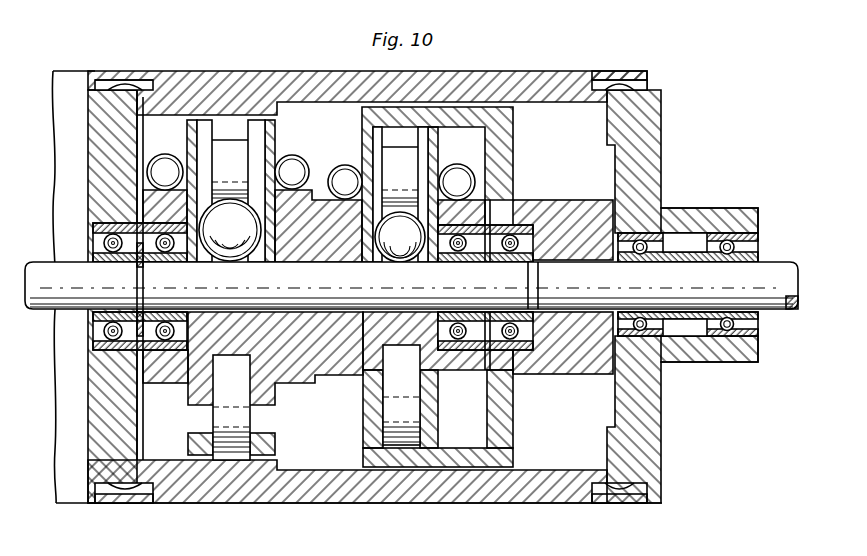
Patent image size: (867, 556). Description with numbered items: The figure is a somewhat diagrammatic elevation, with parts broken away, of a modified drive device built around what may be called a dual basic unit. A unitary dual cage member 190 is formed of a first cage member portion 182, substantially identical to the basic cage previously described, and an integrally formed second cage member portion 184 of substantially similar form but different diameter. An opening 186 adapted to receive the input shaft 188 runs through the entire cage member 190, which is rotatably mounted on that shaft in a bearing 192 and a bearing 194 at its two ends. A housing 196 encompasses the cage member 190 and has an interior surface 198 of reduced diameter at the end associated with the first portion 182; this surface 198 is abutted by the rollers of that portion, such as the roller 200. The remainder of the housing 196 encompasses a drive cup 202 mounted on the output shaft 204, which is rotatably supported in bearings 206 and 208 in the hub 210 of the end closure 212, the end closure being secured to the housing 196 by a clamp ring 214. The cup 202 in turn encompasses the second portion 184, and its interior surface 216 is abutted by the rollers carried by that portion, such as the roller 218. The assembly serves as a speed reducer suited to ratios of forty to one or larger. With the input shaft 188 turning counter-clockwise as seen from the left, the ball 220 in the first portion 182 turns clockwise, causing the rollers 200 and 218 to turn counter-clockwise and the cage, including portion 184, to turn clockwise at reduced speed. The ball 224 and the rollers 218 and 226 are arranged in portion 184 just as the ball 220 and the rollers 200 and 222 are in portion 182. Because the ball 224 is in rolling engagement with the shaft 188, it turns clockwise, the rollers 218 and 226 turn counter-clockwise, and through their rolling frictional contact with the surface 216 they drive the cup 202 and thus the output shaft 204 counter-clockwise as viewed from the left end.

The first cage member portion 182 is at (285, 119).
The second cage member portion 184 is at (497, 106).
The opening 186 is at (316, 262).
The input shaft 188 is at (55, 276).
The dual cage member 190 is at (315, 353).
The bearing 192 is at (155, 348).
The bearing 194 is at (514, 371).
The housing 196 is at (393, 70).
The interior surface 198 is at (163, 112).
The roller 200 is at (232, 460).
The drive cup 202 is at (442, 134).
The output shaft 204 is at (782, 302).
The bearing 206 is at (657, 339).
The bearing 208 is at (738, 337).
The hub 210 is at (707, 210).
The end closure 212 is at (663, 128).
The clamp ring 214 is at (628, 70).
The interior surface 216 is at (447, 443).
The roller 218 is at (398, 443).
The ball 220 is at (230, 210).
The roller 222 is at (218, 150).
The ball 224 is at (405, 227).
The roller 226 is at (390, 152).